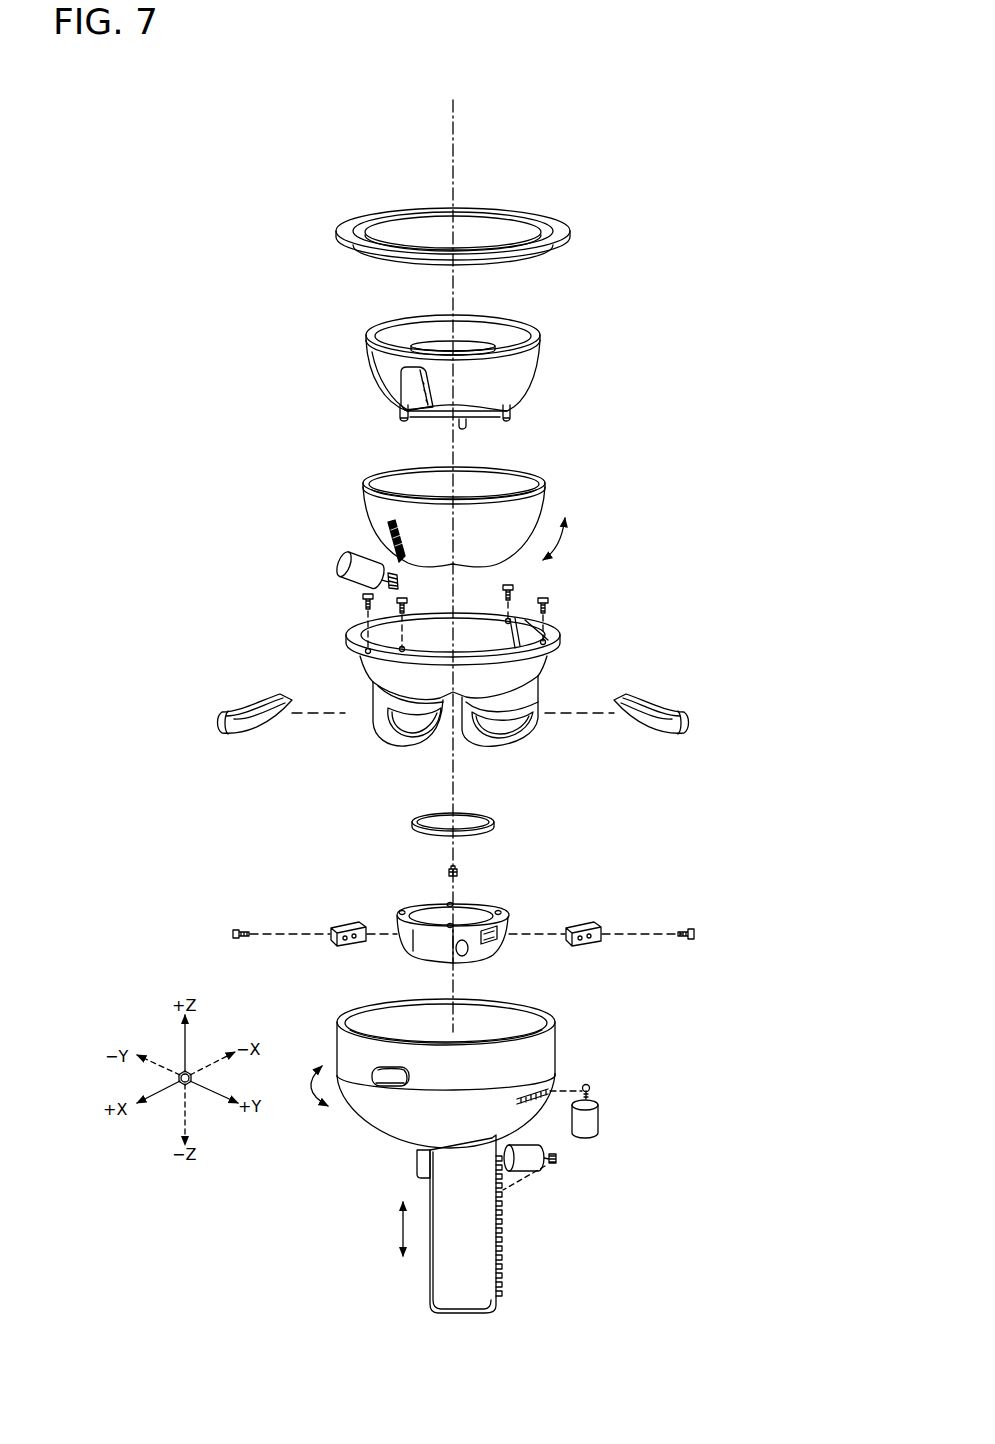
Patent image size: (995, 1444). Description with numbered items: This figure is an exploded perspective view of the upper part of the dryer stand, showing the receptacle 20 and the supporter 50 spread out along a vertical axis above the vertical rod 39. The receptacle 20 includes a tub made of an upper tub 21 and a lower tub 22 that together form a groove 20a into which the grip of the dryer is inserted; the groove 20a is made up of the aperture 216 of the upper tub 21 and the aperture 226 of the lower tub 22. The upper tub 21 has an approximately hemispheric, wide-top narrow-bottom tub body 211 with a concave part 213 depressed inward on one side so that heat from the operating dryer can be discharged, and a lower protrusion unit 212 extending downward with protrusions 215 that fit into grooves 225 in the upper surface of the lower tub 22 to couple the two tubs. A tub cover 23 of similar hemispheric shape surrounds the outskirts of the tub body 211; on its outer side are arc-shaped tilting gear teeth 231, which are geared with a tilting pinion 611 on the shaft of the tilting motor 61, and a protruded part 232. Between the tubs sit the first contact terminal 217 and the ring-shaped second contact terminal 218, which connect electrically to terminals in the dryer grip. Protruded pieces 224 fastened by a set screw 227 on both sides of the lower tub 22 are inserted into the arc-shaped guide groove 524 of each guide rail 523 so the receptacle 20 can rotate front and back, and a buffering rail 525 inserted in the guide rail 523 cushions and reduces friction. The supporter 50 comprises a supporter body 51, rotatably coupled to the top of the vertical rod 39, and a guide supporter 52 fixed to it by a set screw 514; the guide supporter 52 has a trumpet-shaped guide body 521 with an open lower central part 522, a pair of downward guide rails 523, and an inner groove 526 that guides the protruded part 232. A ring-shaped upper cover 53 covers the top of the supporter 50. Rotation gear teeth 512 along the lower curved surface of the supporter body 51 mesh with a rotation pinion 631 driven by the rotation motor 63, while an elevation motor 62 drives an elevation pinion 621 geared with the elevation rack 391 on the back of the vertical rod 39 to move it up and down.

The upper cover 53 is at (393, 210).
The receptacle 20 is at (498, 618).
The groove 20a is at (537, 314).
The upper tub 21 is at (501, 363).
The aperture 216 is at (467, 345).
The tub body 211 is at (385, 363).
The concave part 213 is at (412, 385).
The protrusions 215 is at (508, 413).
The lower protrusion unit 212 is at (428, 415).
The tub cover 23 is at (479, 510).
The protruded part 232 is at (520, 472).
The tilting gear teeth 231 is at (390, 532).
The tilting motor 61 is at (311, 570).
The tilting pinion 611 is at (372, 580).
The set screw 514 is at (545, 604).
The groove 526 is at (525, 632).
The supporter 50 is at (461, 907).
The guide supporter 52 is at (461, 715).
The guide body 521 is at (385, 668).
The guide rails 523 is at (382, 722).
The guide groove 524 is at (413, 717).
The lower central part 522 is at (440, 698).
The buffering rail 525 is at (224, 714).
The second contact terminal 218 is at (468, 812).
The first contact terminal 217 is at (457, 868).
The lower tub 22 is at (498, 898).
The grooves 225 is at (405, 917).
The aperture 226 is at (477, 915).
The protruded pieces 224 is at (602, 932).
The set screw 227 is at (687, 931).
The supporter body 51 is at (512, 1093).
The rotation gear teeth 512 is at (550, 1089).
The rotation pinion 631 is at (591, 1089).
The rotation motor 63 is at (597, 1122).
The elevation motor 62 is at (593, 1174).
The elevation pinion 621 is at (556, 1162).
The elevation rack 391 is at (503, 1232).
The vertical rod 39 is at (513, 1224).